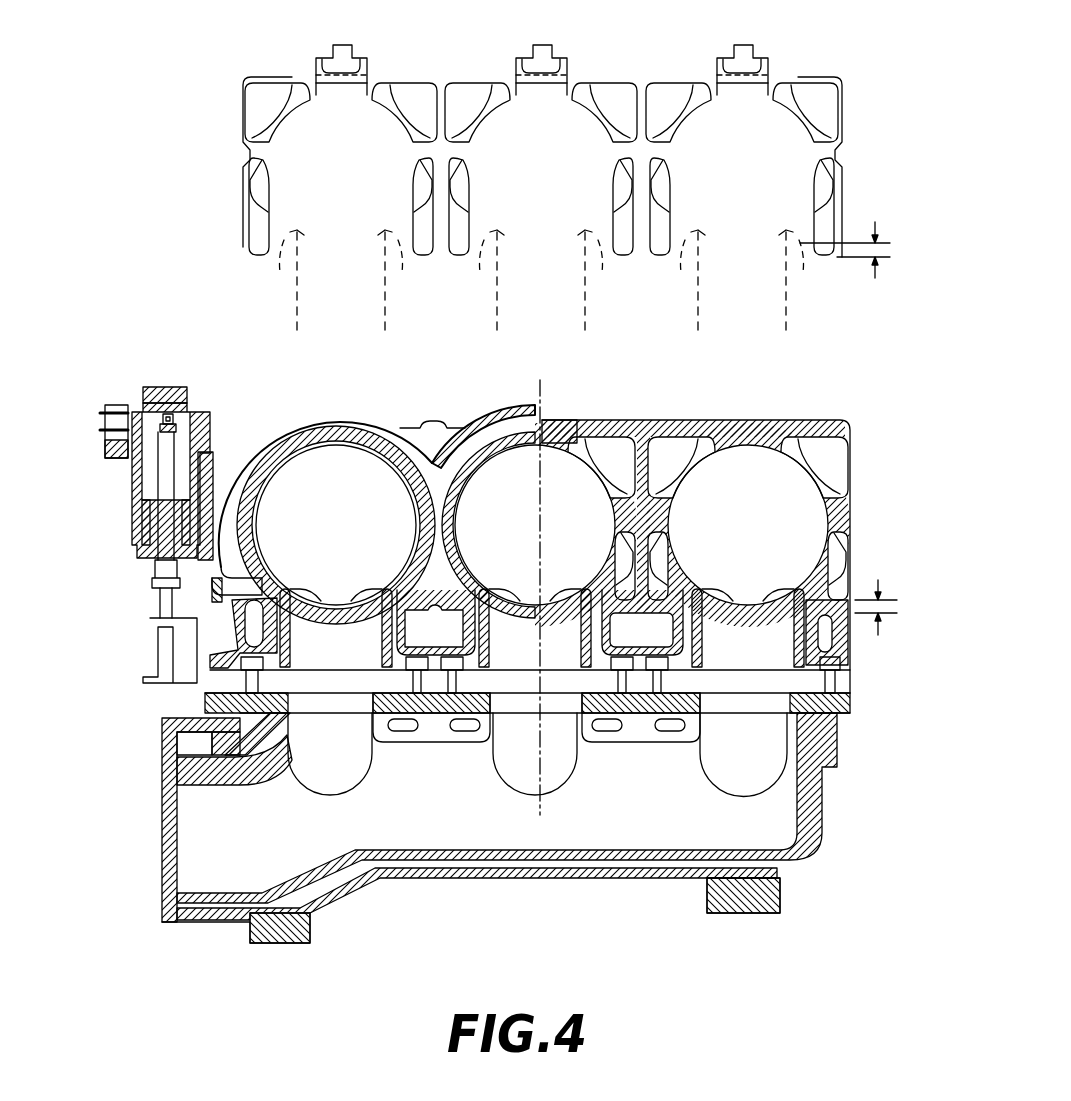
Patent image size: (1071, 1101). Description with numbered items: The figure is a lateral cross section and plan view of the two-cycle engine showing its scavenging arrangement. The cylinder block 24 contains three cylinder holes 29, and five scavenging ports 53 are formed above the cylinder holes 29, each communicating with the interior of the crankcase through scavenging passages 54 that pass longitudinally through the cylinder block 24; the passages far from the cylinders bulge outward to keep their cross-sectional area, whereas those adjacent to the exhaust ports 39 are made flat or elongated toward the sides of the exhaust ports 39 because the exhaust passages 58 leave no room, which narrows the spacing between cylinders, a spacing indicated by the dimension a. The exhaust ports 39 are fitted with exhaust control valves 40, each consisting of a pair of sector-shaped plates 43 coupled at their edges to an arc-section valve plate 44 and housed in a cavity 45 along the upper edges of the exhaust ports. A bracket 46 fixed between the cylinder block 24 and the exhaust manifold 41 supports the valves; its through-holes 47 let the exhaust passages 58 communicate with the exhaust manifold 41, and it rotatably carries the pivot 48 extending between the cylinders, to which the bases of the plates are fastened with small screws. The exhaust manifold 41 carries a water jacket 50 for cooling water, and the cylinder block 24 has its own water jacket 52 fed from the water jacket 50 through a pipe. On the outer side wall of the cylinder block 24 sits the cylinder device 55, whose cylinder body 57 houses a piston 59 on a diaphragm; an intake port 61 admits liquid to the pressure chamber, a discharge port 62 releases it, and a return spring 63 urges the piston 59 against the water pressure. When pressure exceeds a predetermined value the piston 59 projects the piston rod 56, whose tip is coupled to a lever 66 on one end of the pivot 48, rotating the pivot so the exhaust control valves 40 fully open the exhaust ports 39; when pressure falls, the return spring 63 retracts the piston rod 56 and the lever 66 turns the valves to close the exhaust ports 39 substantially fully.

The cylinder block 24 is at (495, 412).
The cylinder holes 29 is at (320, 504).
The exhaust ports 39 is at (715, 240).
The exhaust control valves 40 is at (355, 590).
The exhaust manifold 41 is at (570, 877).
The plates 43 is at (400, 608).
The valve plate 44 is at (327, 597).
The cavity 45 is at (295, 583).
The bracket 46 is at (288, 697).
The through-holes 47 is at (300, 697).
The pivot 48 is at (515, 683).
The water jacket 50 is at (490, 863).
The water jacket 52 is at (397, 435).
The scavenging ports 53 is at (747, 95).
The scavenging passages 54 is at (772, 48).
The cylinder device 55 is at (149, 503).
The piston rod 56 is at (157, 597).
The cylinder body 57 is at (130, 480).
The exhaust passages 58 is at (732, 317).
The piston 59 is at (140, 452).
The intake port 61 is at (170, 385).
The discharge port 62 is at (176, 400).
The return spring 63 is at (133, 513).
The lever 66 is at (163, 653).
The wall thickness dimension a is at (885, 244).